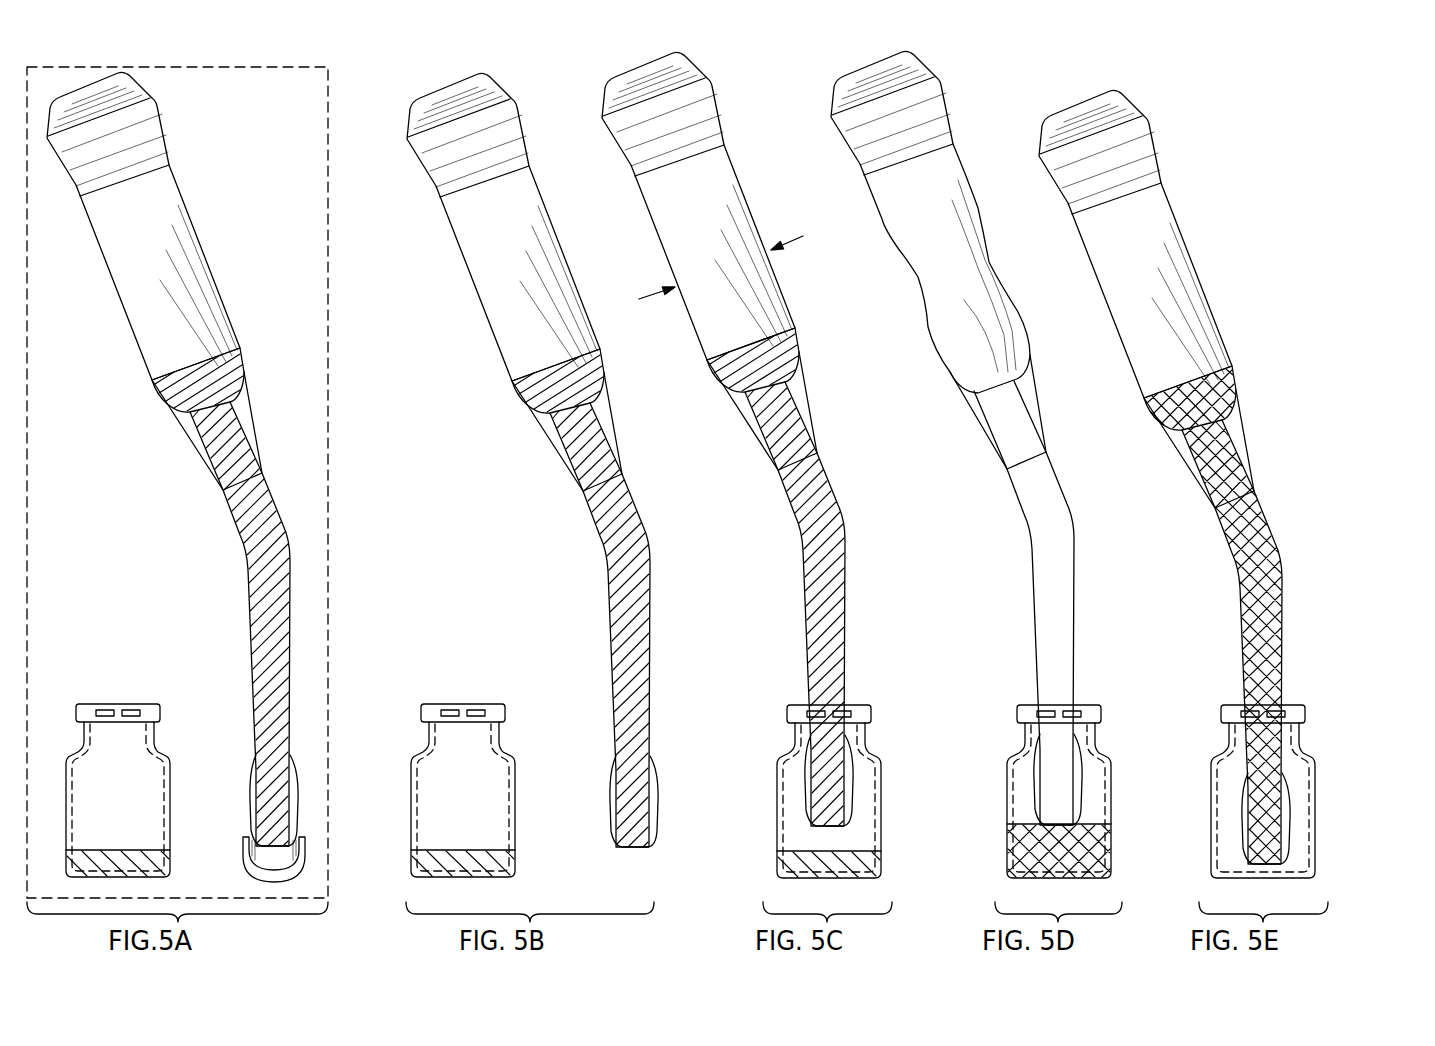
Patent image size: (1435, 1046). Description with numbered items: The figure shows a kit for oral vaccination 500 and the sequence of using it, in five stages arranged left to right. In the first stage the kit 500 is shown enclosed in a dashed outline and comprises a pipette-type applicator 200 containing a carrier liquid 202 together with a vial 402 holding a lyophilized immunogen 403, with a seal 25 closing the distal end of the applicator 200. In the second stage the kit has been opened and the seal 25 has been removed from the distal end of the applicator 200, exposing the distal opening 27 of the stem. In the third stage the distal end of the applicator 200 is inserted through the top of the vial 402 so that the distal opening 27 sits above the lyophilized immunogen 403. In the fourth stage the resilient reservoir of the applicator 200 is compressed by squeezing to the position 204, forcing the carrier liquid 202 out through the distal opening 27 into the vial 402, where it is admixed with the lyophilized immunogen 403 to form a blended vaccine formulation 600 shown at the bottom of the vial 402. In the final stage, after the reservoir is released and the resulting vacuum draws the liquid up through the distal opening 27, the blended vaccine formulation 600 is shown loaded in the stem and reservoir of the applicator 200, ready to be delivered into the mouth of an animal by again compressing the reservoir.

In FIG. 5A, the kit for oral vaccination 500 is at (330, 88).
In FIG. 5A, the applicator 200 is at (208, 262).
In FIG. 5B, the applicator 200 is at (568, 264).
In FIG. 5C, the applicator 200 is at (745, 184).
In FIG. 5D, the applicator 200 is at (961, 151).
In FIG. 5E, the applicator 200 is at (1184, 226).
In FIG. 5A, the carrier liquid 202 is at (242, 518).
In FIG. 5B, the carrier liquid 202 is at (600, 521).
In FIG. 5C, the carrier liquid 202 is at (797, 496).
In FIG. 5D, the carrier liquid 202 is at (1024, 603).
In FIG. 5D, the squeezed position of resilient reservoir 204 is at (989, 264).
In FIG. 5A, the seal 25 is at (300, 857).
In FIG. 5B, the distal opening 27 is at (632, 849).
In FIG. 5C, the distal opening 27 is at (831, 825).
In FIG. 5D, the distal opening 27 is at (1063, 825).
In FIG. 5E, the distal opening 27 is at (1267, 860).
In FIG. 5A, the vial 402 is at (170, 766).
In FIG. 5B, the vial 402 is at (516, 770).
In FIG. 5C, the vial 402 is at (884, 770).
In FIG. 5D, the vial 402 is at (1113, 770).
In FIG. 5E, the vial 402 is at (1320, 770).
In FIG. 5A, the lyophilized immunogen 403 is at (158, 864).
In FIG. 5B, the lyophilized immunogen 403 is at (507, 867).
In FIG. 5C, the lyophilized immunogen 403 is at (867, 865).
In FIG. 5D, the blended vaccine formulation 600 is at (1099, 859).
In FIG. 5E, the blended vaccine formulation 600 is at (1265, 551).